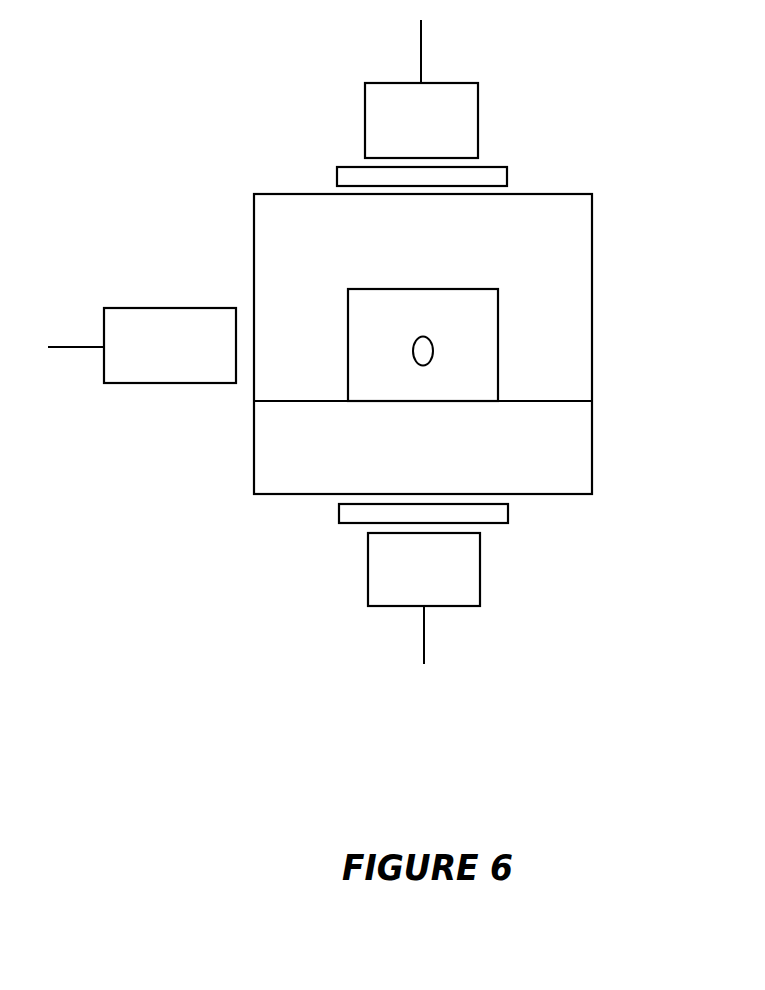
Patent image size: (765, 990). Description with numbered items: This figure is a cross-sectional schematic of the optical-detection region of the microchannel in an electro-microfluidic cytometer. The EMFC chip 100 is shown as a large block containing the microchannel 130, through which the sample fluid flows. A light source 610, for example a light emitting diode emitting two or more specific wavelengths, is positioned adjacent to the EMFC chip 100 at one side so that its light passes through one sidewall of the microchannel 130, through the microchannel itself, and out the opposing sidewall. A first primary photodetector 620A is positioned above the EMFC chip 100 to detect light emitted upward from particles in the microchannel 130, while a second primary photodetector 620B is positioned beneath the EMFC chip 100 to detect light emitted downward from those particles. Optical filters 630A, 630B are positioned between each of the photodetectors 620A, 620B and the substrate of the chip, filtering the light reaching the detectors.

The EMFC chip 100 is at (461, 320).
The microchannel 130 is at (453, 327).
The light source 610 is at (142, 345).
The first primary photodetector 620A is at (421, 89).
The second primary photodetector 620B is at (424, 598).
The optical filter 630A is at (353, 151).
The optical filter 630B is at (363, 538).